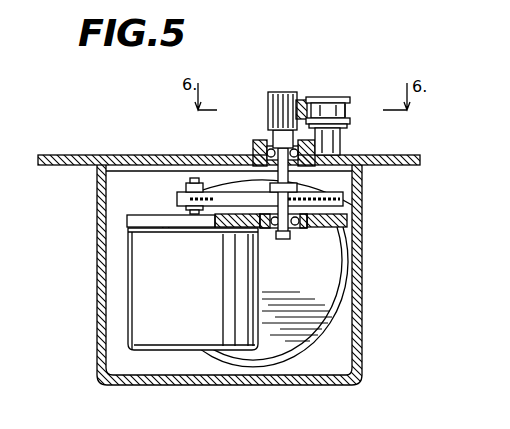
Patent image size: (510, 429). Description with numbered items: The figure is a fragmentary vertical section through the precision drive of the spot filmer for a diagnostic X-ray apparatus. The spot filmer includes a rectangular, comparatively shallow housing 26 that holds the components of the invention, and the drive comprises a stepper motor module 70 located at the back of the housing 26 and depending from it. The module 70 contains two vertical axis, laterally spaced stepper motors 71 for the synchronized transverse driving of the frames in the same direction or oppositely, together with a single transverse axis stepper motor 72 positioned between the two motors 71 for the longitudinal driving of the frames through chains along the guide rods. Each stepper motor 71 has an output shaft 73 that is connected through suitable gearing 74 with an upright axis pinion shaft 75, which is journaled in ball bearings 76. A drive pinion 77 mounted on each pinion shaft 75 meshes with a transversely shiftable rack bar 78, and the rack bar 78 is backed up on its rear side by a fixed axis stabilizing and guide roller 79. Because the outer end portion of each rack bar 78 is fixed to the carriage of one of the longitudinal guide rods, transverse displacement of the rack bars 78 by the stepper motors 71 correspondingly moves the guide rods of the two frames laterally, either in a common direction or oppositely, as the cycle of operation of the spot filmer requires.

The housing 26 is at (411, 166).
The stepper motor module 70 is at (94, 290).
The stepper motor 71 is at (195, 288).
The stepper motor 72 is at (312, 288).
The output shaft 73 is at (192, 182).
The gearing 74 is at (230, 197).
The pinion shaft 75 is at (350, 220).
The ball bearings 76 is at (263, 140).
The drive pinion 77 is at (287, 92).
The rack bar 78 is at (312, 102).
The stabilizing and guide roller 79 is at (347, 110).